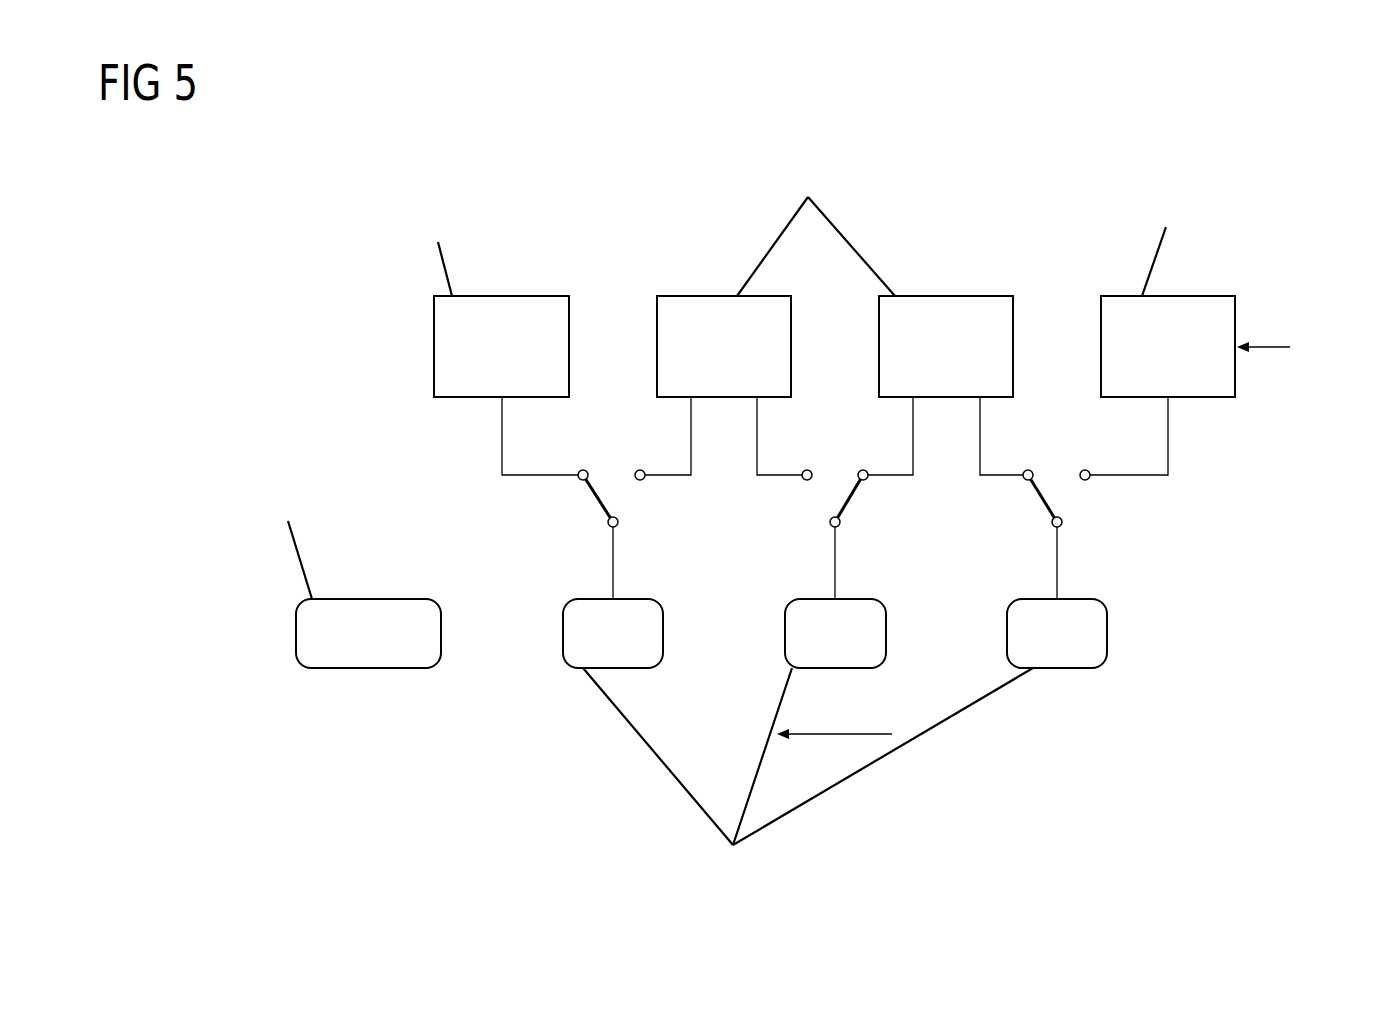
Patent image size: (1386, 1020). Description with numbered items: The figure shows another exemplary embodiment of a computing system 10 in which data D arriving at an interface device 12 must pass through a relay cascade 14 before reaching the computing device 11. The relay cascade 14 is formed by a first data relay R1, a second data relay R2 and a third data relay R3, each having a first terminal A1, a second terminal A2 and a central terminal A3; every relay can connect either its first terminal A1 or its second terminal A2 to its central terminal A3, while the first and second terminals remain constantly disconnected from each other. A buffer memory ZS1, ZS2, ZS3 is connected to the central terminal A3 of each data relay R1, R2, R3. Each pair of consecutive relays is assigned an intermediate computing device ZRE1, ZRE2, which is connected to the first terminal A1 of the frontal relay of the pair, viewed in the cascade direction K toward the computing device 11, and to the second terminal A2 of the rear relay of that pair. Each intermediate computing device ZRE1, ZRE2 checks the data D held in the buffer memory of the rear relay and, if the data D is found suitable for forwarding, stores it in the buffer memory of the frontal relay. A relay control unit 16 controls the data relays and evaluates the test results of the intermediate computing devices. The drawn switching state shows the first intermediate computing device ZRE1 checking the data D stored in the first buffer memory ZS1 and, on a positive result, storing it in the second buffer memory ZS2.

The computing system 10 is at (243, 792).
The computing device 11 is at (518, 363).
The interface device 12 is at (1185, 363).
The relay cascade 14 is at (720, 651).
The relay control unit 16 is at (386, 652).
The first intermediate computing device ZRE1 is at (978, 363).
The second intermediate computing device ZRE2 is at (757, 363).
The first buffer memory ZS1 is at (1083, 652).
The second buffer memory ZS2 is at (862, 652).
The third buffer memory ZS3 is at (638, 652).
The first data relay R1 is at (1056, 452).
The second data relay R2 is at (834, 452).
The third data relay R3 is at (611, 452).
The first terminal A1 is at (644, 470).
The second terminal A2 is at (580, 470).
The central terminal A3 is at (608, 523).
The data D is at (1263, 329).
The cascade direction K is at (834, 750).